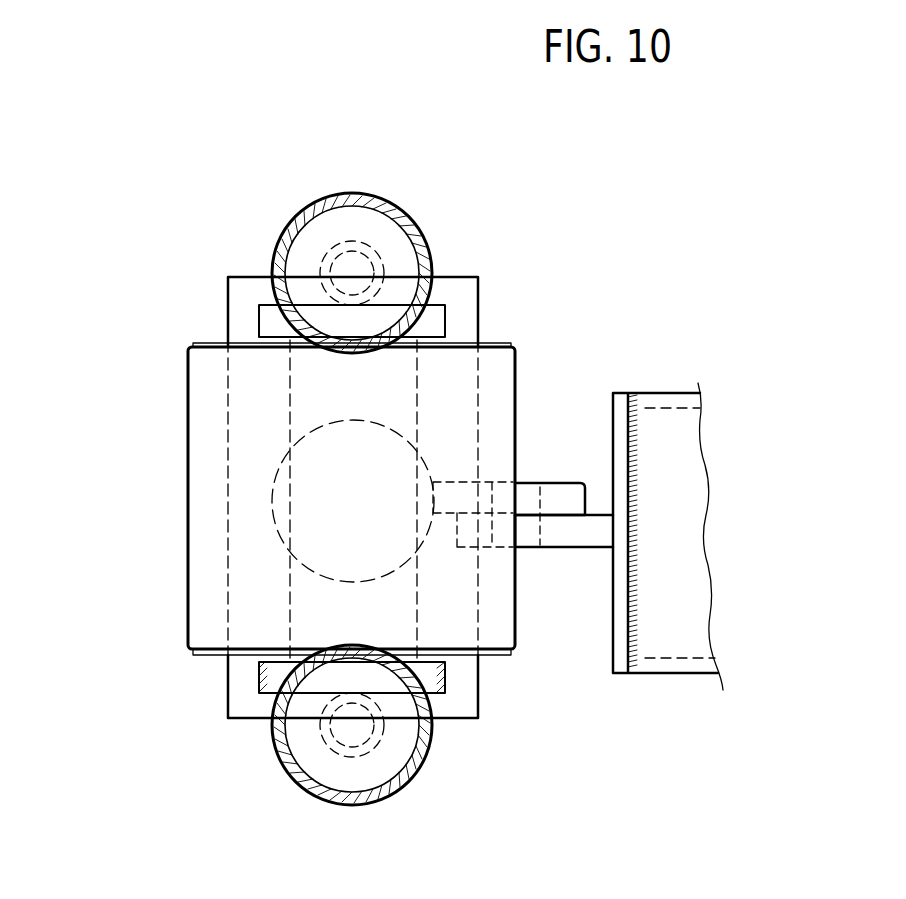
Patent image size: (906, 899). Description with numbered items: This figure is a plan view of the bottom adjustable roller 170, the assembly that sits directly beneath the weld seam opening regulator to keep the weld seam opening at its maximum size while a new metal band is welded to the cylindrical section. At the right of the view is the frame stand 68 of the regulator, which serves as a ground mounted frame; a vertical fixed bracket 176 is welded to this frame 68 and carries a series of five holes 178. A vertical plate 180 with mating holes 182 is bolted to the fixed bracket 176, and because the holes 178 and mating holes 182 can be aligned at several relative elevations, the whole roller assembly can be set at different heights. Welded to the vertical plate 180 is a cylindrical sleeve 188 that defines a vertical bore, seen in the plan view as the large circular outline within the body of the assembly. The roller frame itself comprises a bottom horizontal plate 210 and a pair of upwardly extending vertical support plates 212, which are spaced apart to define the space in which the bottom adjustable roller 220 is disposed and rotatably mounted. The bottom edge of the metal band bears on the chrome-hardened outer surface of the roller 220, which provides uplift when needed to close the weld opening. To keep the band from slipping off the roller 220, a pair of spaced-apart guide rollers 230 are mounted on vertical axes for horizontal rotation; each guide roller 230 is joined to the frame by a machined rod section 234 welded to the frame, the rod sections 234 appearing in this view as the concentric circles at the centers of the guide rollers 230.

The bottom adjustable roller 170 is at (136, 266).
The bottom adjustable roller 220 is at (203, 430).
The cylindrical sleeve 188 is at (300, 515).
The bottom horizontal plate 210 is at (467, 312).
The vertical support plates 212 is at (263, 315).
The guide rollers 230 is at (400, 210).
The machined rod sections 234 is at (387, 257).
The vertical plate 180 is at (567, 498).
The mating holes 182 is at (517, 498).
The vertical fixed bracket 176 is at (575, 540).
The holes 178 is at (528, 545).
The frame stand 68 is at (700, 485).